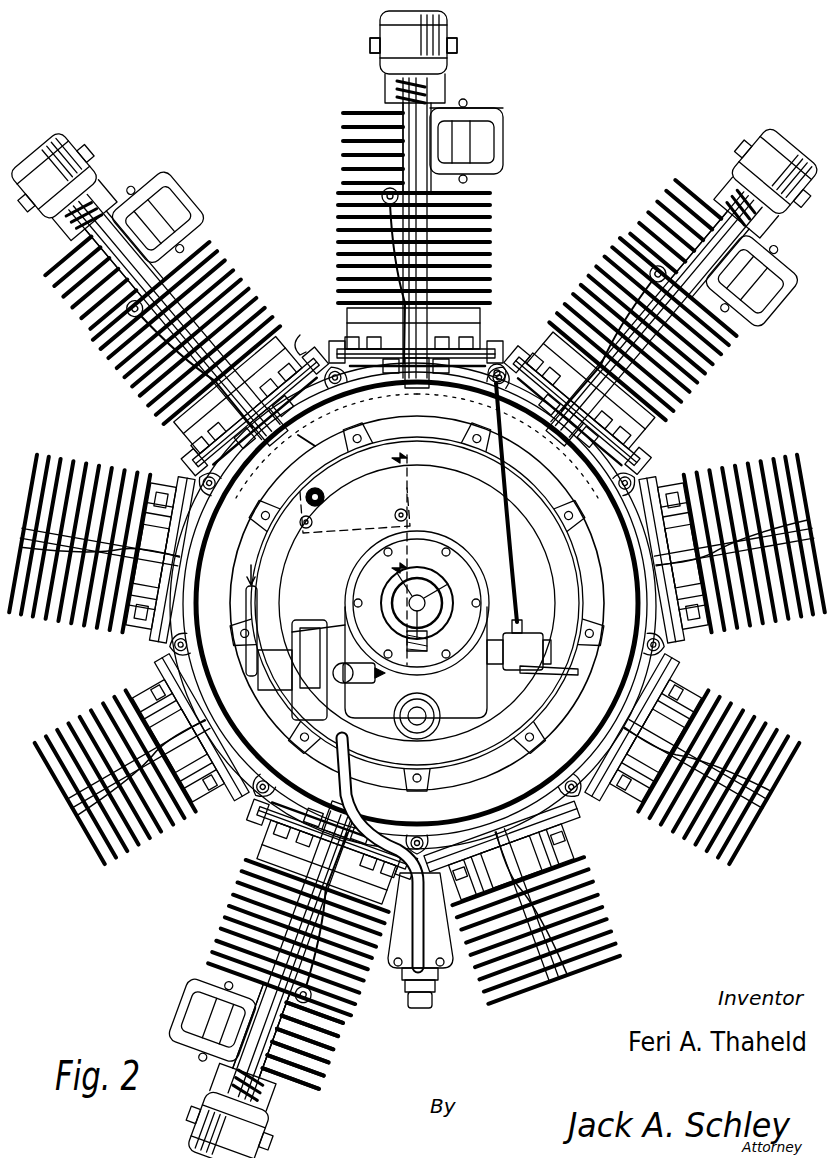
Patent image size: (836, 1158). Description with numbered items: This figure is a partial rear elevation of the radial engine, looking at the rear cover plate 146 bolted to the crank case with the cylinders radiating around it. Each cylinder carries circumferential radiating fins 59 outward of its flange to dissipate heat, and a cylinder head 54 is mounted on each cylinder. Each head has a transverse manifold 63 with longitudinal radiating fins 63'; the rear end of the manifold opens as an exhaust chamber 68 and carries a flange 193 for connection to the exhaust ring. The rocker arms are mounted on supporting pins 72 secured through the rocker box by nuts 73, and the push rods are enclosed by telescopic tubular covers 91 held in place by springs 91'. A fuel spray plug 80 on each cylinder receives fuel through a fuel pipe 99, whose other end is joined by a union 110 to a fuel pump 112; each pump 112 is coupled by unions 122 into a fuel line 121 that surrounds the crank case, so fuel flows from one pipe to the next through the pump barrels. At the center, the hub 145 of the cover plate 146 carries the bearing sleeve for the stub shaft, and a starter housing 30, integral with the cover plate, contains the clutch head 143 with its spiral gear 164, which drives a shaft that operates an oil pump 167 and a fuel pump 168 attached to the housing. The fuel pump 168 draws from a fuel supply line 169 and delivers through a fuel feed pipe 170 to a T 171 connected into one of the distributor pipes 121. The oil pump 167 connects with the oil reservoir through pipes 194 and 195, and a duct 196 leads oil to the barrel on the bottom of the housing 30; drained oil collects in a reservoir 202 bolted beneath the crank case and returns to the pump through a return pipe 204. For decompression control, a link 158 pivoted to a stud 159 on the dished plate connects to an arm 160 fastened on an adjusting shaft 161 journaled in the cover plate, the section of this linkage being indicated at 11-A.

The starter housing 30 is at (483, 607).
The rear cover plate 146 is at (566, 548).
The union 122 is at (420, 415).
The fuel pump 112 is at (298, 440).
The circumferential radiating fins 59 is at (112, 475).
The fuel pipe 99 is at (133, 843).
The cylinder head 54 is at (448, 40).
The supporting pin 72 is at (457, 47).
The nut 73 is at (370, 45).
The spring 91' is at (304, 222).
The manifold 63 is at (226, 594).
The radiating fins 63' is at (307, 1041).
The exhaust chamber 68 is at (475, 143).
The flange 193 is at (497, 115).
The fuel spray plug 80 is at (382, 197).
The union 110 is at (410, 312).
The telescopic tubular cover 91 is at (411, 613).
The fuel line 121 is at (314, 333).
The T 171 is at (503, 365).
The fuel feed pipe 170 is at (512, 530).
The hub 145 is at (417, 603).
The clutch head 143 is at (442, 596).
The spiral gear 164 is at (412, 581).
The section line 11-A is at (386, 559).
The oil pump 167 is at (340, 625).
The pipe 194 is at (272, 620).
The pipe 195 is at (378, 675).
The duct 196 is at (380, 732).
The fuel pump 168 is at (532, 640).
The fuel supply line 169 is at (570, 675).
The link 158 is at (355, 503).
The adjusting shaft 161 is at (320, 490).
The arm 160 is at (331, 508).
The stud 159 is at (408, 513).
The return pipe 204 is at (360, 808).
The reservoir 202 is at (445, 950).